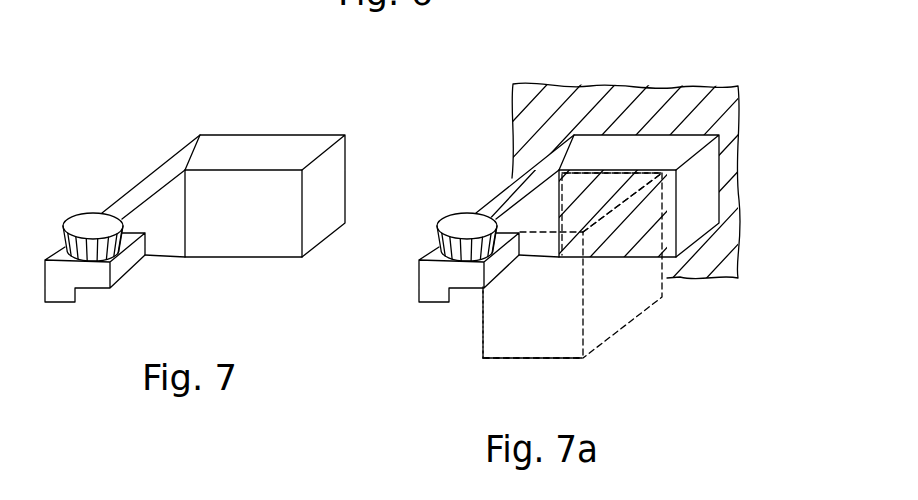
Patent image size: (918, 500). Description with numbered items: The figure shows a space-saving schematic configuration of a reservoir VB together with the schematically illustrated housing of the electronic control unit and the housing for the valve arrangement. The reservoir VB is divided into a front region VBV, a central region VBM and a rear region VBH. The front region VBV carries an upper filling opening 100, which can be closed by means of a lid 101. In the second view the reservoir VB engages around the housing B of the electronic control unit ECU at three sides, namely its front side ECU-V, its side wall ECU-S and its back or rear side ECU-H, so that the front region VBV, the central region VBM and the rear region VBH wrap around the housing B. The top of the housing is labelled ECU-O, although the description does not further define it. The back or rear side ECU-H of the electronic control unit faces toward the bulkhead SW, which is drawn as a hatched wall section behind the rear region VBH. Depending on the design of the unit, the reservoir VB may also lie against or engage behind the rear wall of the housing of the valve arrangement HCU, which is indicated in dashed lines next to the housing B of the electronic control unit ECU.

In FIG. 7, the reservoir VB is at (217, 221).
In FIG. 7A, the reservoir VB is at (571, 209).
In FIG. 7, the rear region VBH is at (332, 177).
In FIG. 7A, the rear region VBH is at (700, 171).
In FIG. 7, the central region VBM is at (180, 246).
In FIG. 7A, the central region VBM is at (528, 177).
In FIG. 7, the front region VBV is at (110, 288).
In FIG. 7A, the front region VBV is at (418, 280).
In FIG. 7, the filling opening 100 is at (75, 201).
In FIG. 7A, the filling opening 100 is at (449, 201).
In FIG. 7, the lid 101 is at (93, 212).
In FIG. 7A, the lid 101 is at (467, 212).
In FIG. 7A, the bulkhead SW is at (725, 248).
In FIG. 7A, the electronic control unit ECU is at (537, 219).
In FIG. 7A, the housing of the valve arrangement HCU is at (652, 297).
In FIG. 7A, the side wall ECU-S is at (483, 308).
In FIG. 7A, the front side ECU-V is at (483, 347).
In FIG. 7A, the ECU top face ECU-O is at (570, 190).
In FIG. 7A, the back or rear side ECU-H is at (628, 173).
In FIG. 7A, the housing B is at (532, 345).